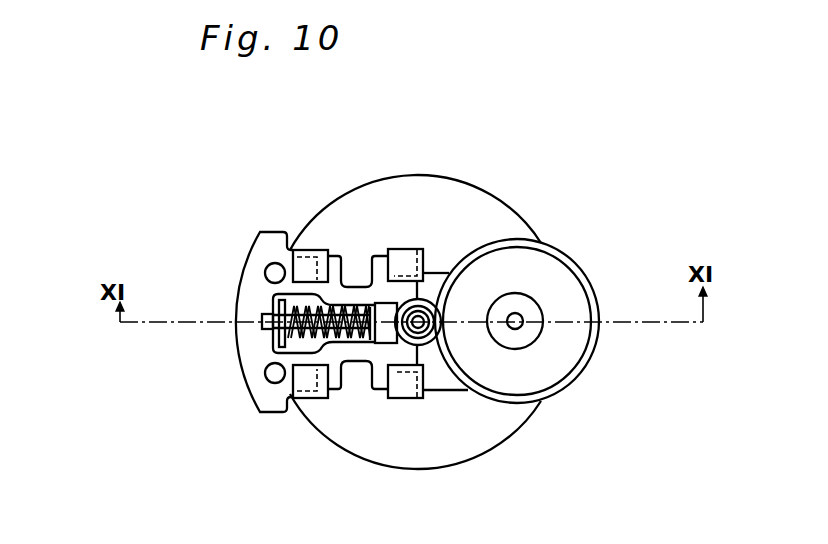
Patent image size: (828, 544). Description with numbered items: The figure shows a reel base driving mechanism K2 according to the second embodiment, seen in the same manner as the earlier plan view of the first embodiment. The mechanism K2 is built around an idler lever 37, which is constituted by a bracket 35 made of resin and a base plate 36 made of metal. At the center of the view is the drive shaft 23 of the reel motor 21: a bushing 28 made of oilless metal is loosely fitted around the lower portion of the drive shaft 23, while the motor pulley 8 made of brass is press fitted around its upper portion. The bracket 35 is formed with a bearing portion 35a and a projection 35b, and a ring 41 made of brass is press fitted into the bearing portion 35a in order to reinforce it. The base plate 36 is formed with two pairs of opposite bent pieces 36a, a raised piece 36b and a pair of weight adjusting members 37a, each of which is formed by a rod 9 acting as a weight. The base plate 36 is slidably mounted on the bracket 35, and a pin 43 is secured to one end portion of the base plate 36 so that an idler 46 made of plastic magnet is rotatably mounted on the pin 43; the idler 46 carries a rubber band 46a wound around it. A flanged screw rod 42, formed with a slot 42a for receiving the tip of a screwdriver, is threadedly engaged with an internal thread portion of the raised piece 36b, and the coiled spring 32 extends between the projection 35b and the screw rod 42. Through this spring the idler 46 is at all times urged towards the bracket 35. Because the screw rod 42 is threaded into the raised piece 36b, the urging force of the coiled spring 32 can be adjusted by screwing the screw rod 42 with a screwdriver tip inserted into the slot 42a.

The reel motor 21 is at (500, 215).
The reel base driving mechanism K2 is at (578, 201).
The idler lever 37 is at (251, 238).
The weight adjusting members 37a is at (267, 240).
The rod 9 is at (270, 258).
The bent pieces 36a is at (309, 260).
The bearing portion 35a is at (428, 288).
The projection 35b is at (354, 385).
The bracket 35 is at (272, 348).
The flanged screw rod 42 is at (263, 318).
The slot 42a is at (266, 322).
The raised piece 36b is at (286, 340).
The coiled spring 32 is at (255, 355).
The bushing 28 is at (432, 303).
The drive shaft 23 is at (436, 332).
The idler 46 is at (586, 284).
The rubber band 46a is at (597, 386).
The pin 43 is at (517, 330).
The ring 41 is at (460, 272).
The motor pulley 8 is at (462, 388).
The base plate 36 is at (430, 394).